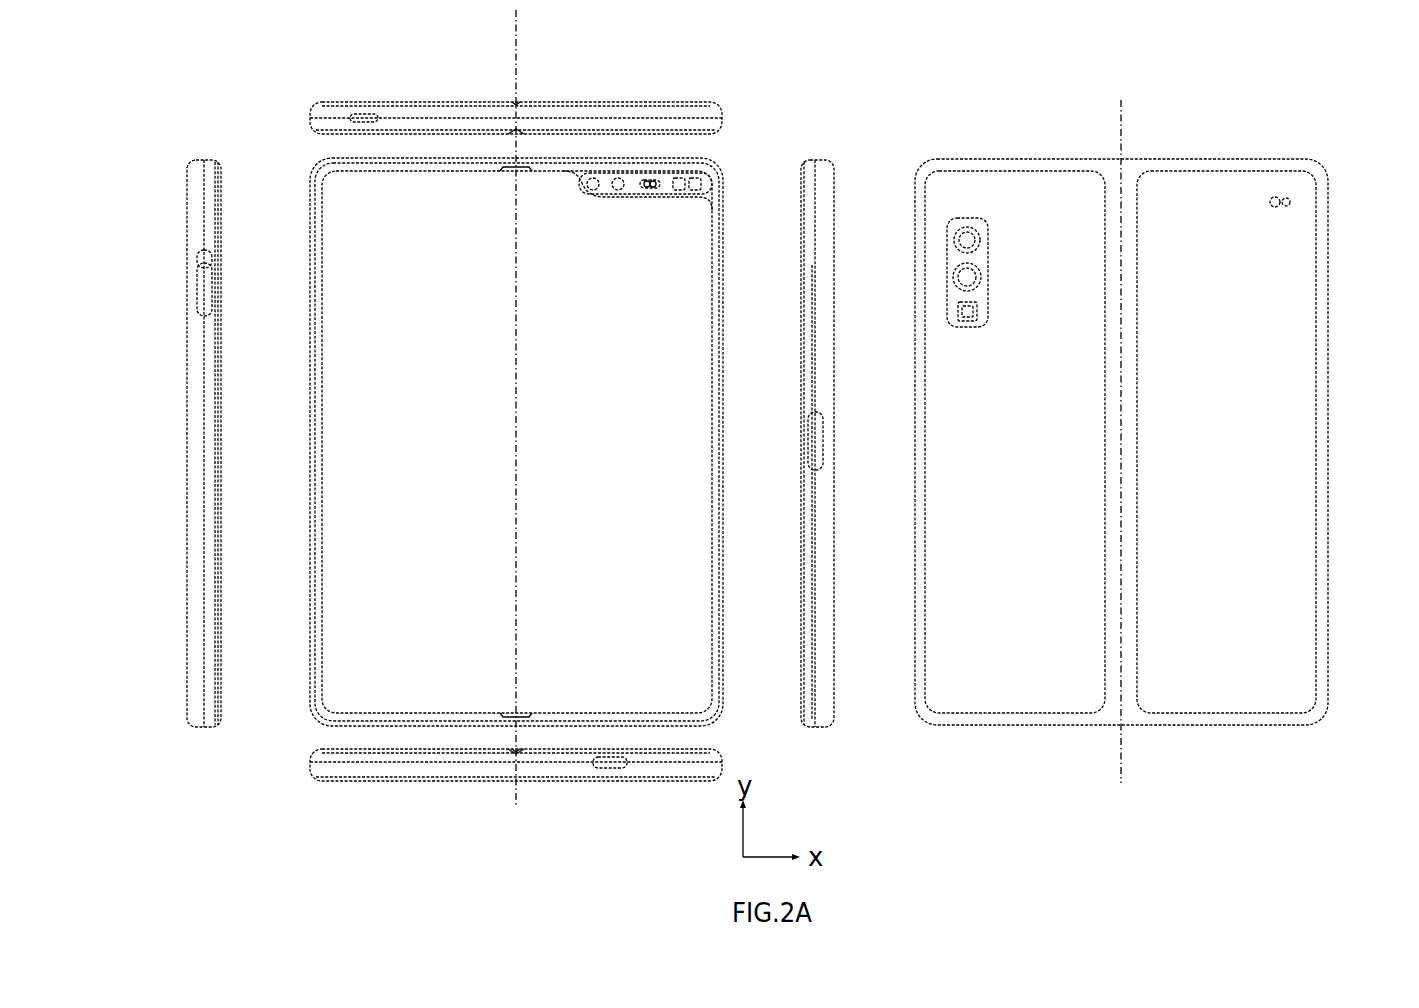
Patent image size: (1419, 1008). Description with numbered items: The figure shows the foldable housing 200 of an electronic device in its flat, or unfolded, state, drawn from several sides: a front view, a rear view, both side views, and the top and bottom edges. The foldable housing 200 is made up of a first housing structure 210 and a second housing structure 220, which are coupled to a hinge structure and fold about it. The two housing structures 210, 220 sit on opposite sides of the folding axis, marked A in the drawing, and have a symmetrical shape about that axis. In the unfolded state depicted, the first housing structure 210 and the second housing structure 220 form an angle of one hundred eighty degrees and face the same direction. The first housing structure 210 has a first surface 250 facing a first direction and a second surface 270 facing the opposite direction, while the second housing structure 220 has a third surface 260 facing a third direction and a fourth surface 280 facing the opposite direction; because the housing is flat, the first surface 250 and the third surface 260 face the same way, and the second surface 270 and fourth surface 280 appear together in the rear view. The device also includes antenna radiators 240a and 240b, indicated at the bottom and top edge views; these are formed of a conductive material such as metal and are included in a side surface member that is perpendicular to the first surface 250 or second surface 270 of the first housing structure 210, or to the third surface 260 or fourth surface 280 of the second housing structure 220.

The foldable housing 200 is at (192, 91).
The first housing structure 210 is at (474, 106).
The second housing structure 220 is at (636, 106).
The antenna radiator 240a is at (489, 786).
The antenna radiator 240b is at (534, 94).
The first surface 250 is at (347, 481).
The third surface 260 is at (697, 483).
The second surface 270 is at (1300, 483).
The fourth surface 280 is at (945, 483).